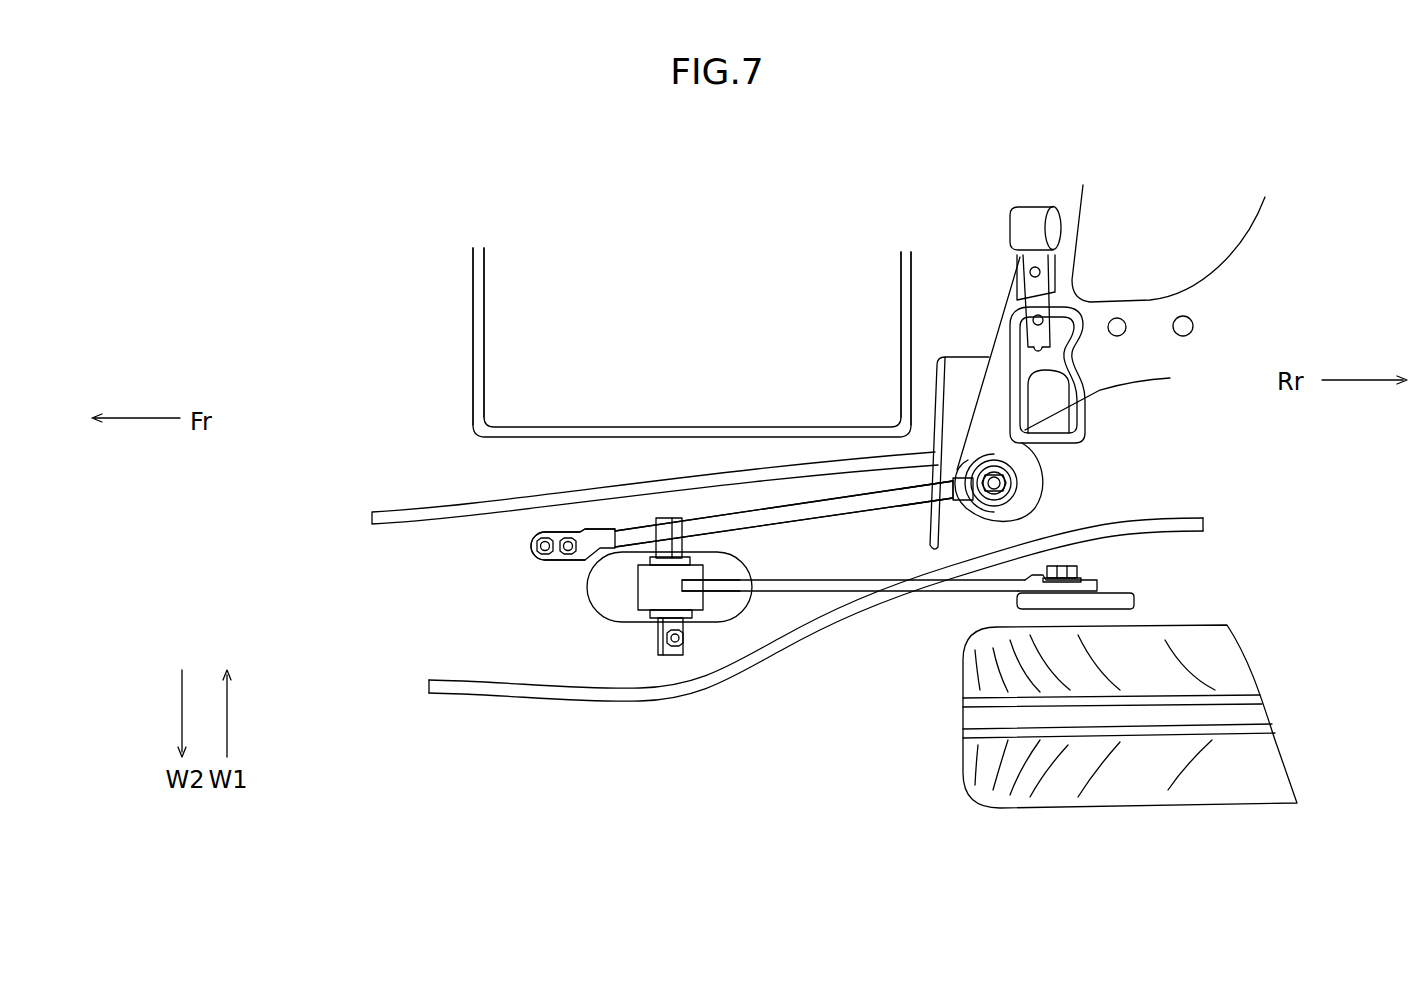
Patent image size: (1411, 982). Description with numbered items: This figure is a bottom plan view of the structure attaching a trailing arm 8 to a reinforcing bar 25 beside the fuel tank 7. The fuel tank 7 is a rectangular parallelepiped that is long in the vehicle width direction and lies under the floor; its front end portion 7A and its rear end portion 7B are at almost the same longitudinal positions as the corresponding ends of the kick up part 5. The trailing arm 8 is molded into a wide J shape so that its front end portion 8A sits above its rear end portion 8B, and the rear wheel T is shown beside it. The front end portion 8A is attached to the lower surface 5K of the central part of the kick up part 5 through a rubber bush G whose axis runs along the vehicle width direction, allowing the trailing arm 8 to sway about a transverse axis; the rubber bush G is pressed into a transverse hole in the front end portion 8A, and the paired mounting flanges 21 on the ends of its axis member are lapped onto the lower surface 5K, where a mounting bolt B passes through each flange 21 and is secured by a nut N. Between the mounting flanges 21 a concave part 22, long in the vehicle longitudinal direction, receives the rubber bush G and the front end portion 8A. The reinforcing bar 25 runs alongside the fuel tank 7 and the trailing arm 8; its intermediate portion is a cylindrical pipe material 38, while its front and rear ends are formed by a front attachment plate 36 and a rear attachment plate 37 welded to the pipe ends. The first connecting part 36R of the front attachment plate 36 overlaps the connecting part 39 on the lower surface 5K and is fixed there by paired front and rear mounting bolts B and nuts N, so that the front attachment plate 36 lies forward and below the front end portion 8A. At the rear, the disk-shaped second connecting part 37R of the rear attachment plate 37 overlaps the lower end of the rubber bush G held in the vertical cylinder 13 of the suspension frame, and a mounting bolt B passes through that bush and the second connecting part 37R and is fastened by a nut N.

The fuel tank 7 is at (485, 259).
The front end portion 7A is at (492, 307).
The rear end portion 7B is at (893, 284).
The kick up part 5 is at (591, 663).
The lower surface 5K is at (624, 523).
The reinforcing bar 25 is at (793, 484).
The front attachment plate 36 is at (560, 519).
The first connecting part 36R is at (537, 533).
The pipe material 38 is at (805, 520).
The second connecting part 37R is at (975, 478).
The rear attachment plate 37 is at (1016, 481).
The vertical cylinder 13 is at (1015, 492).
The mounting flange 21 is at (668, 520).
The concave part 22 is at (593, 612).
The connecting part 39 is at (637, 643).
The trailing arm 8 is at (845, 601).
The front end portion 8A is at (730, 590).
The rear end portion 8B is at (983, 585).
The rubber bush G is at (697, 558).
The nut N is at (567, 537).
The mounting bolt B is at (540, 556).
The rear wheel T is at (973, 788).